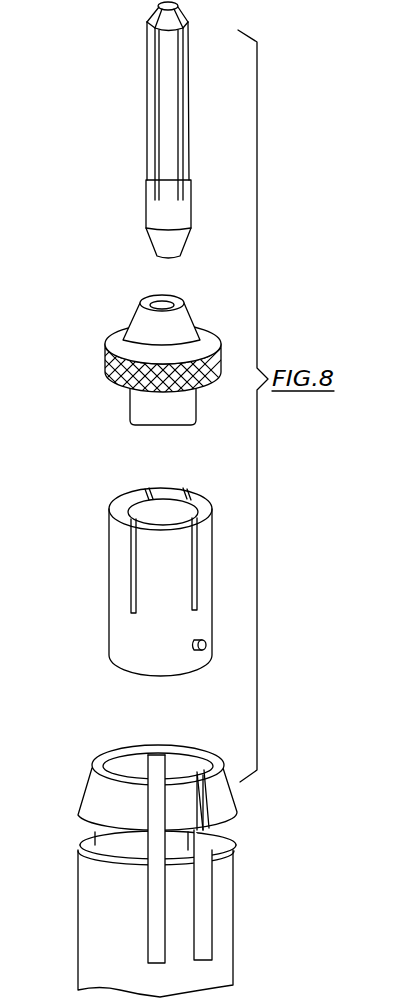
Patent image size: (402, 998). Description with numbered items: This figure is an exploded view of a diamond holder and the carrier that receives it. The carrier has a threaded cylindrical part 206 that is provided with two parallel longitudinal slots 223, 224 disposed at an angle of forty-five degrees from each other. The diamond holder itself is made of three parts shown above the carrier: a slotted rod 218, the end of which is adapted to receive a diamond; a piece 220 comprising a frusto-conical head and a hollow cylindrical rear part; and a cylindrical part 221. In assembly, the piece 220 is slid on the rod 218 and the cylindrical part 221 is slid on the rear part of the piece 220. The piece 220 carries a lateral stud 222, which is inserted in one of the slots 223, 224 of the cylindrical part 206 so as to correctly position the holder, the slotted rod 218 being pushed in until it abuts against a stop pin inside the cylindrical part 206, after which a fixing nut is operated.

The threaded cylindrical part 206 is at (157, 871).
The slotted rod 218 is at (152, 113).
The piece 220 is at (108, 366).
The cylindrical part 221 is at (135, 582).
The lateral stud 222 is at (198, 645).
The longitudinal slot 223 is at (145, 955).
The longitudinal slot 224 is at (200, 875).